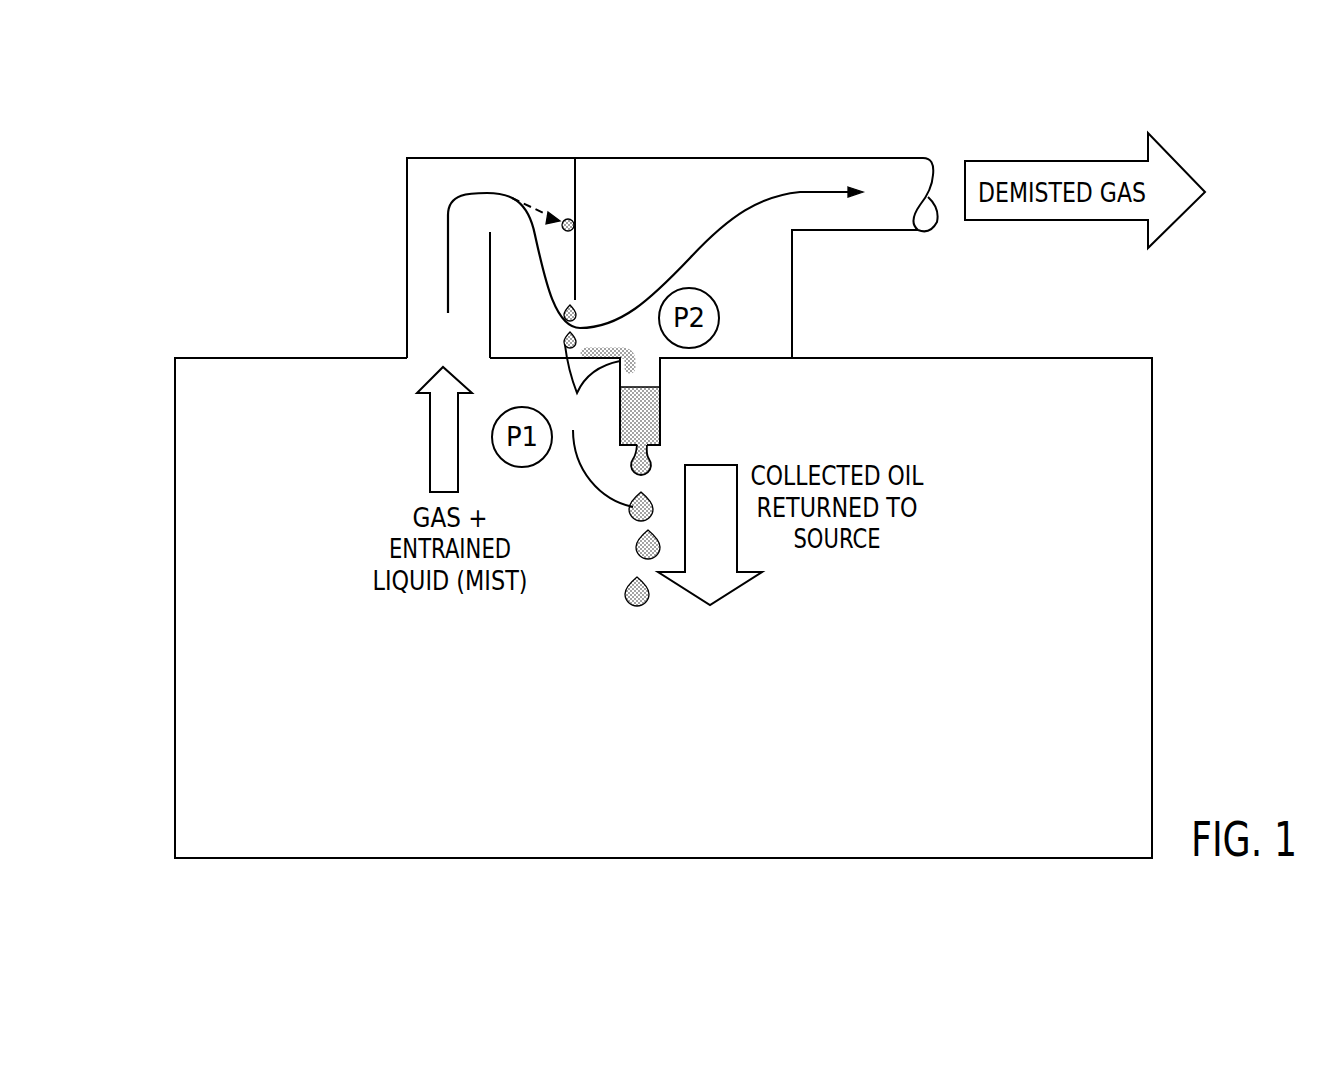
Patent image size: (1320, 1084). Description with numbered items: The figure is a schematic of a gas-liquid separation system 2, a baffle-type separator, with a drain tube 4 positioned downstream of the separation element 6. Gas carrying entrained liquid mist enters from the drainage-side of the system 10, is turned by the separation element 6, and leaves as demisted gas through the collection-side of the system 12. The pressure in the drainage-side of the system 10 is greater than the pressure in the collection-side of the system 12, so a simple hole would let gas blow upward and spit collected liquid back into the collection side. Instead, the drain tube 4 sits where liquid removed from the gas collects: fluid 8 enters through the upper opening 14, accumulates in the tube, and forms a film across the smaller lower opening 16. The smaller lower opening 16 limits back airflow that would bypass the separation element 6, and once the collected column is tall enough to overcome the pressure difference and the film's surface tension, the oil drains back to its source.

The gas-liquid separation system 2 is at (1152, 450).
The drain tube 4 is at (640, 417).
The separation element 6 is at (484, 158).
The fluid 8 is at (628, 418).
The drainage-side of the system 10 is at (1100, 662).
The collection-side of the system 12 is at (770, 308).
The upper opening 14 is at (647, 358).
The lower opening 16 is at (648, 458).